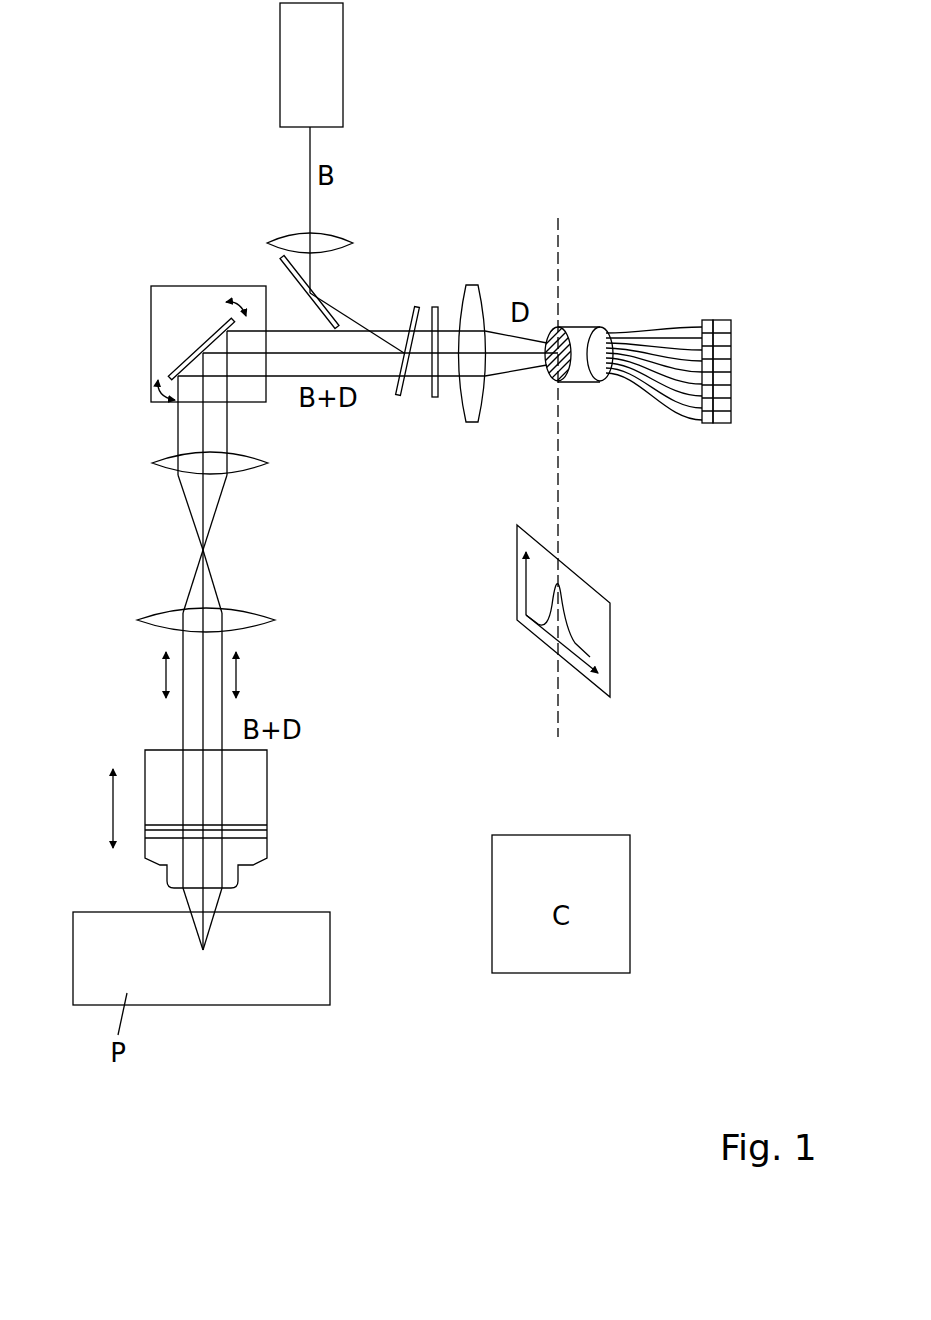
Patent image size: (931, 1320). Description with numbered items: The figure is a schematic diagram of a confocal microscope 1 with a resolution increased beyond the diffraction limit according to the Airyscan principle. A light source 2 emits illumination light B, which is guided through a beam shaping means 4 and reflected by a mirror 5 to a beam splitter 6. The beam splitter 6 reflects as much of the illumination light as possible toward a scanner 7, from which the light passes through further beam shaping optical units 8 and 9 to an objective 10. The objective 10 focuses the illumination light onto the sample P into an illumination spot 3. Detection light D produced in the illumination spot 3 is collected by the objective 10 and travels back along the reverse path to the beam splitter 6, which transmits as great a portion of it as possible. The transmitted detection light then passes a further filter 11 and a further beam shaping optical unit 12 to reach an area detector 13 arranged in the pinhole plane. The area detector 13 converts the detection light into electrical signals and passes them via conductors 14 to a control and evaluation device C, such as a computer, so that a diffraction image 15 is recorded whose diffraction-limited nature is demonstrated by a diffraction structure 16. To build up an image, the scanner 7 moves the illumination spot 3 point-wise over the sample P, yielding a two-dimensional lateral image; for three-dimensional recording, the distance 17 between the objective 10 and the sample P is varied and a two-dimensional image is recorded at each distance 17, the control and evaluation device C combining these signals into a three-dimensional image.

The confocal microscope 1 is at (124, 225).
The light source 2 is at (311, 65).
The illumination spot 3 is at (203, 950).
The beam shaping means 4 is at (280, 241).
The mirror 5 is at (281, 268).
The beam splitter 6 is at (412, 307).
The scanner 7 is at (150, 326).
The beam shaping optical unit 8 is at (152, 463).
The beam shaping optical unit 9 is at (137, 620).
The objective 10 is at (267, 797).
The filter 11 is at (435, 400).
The beam shaping optical unit 12 is at (479, 292).
The area detector 13 is at (563, 328).
The conductors 14 is at (715, 320).
The diffraction image 15 is at (558, 470).
The diffraction structure 16 is at (562, 587).
The distance 17 is at (96, 808).